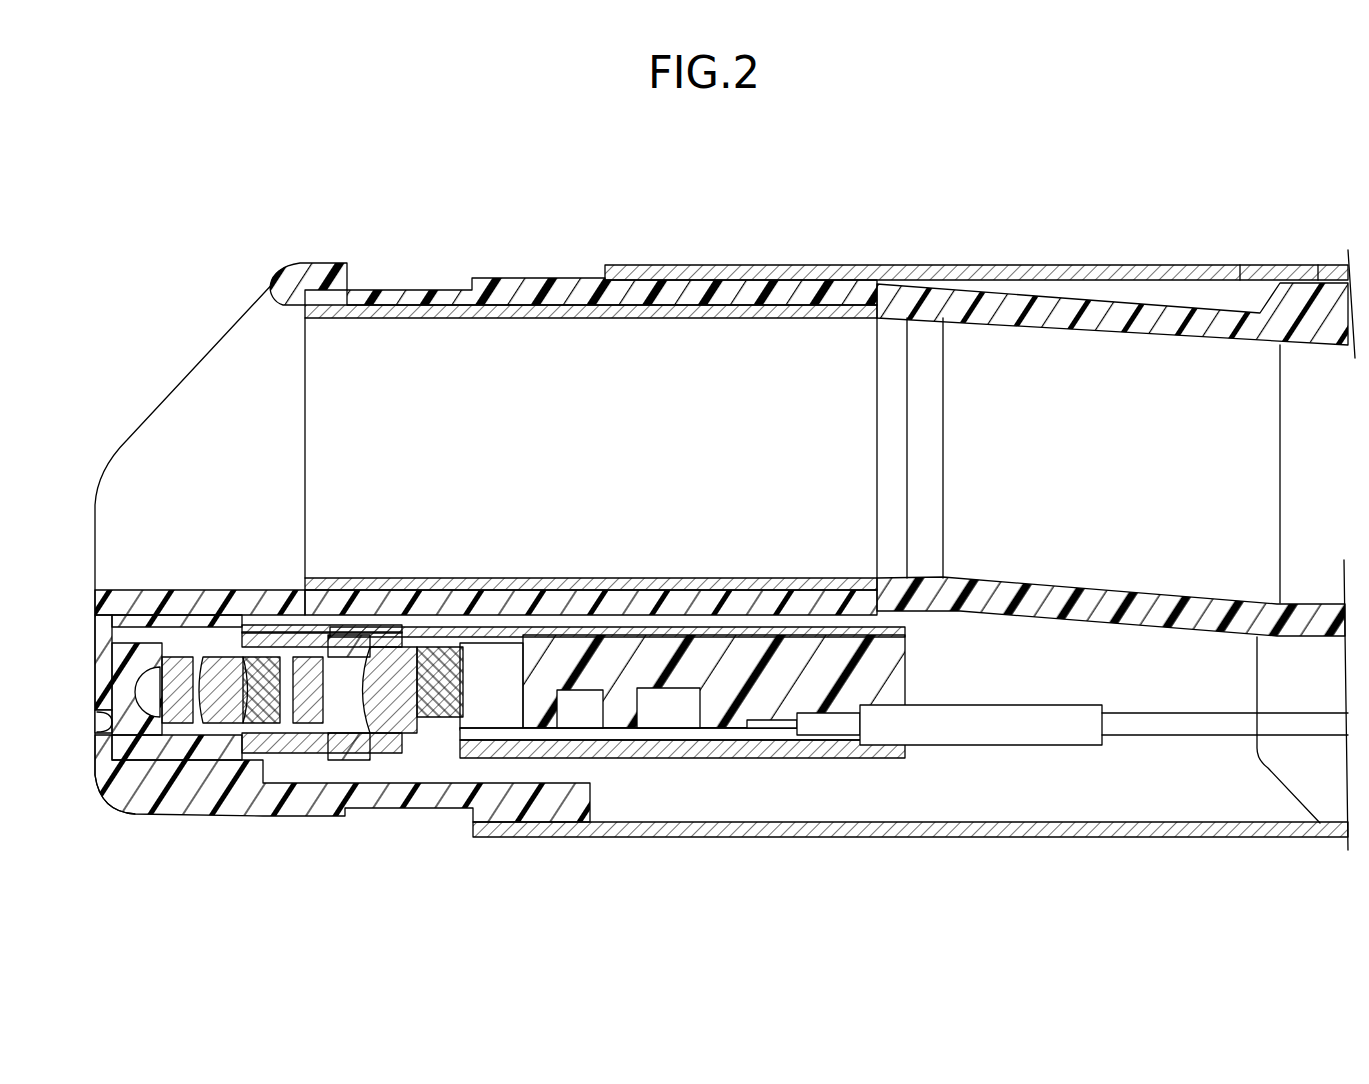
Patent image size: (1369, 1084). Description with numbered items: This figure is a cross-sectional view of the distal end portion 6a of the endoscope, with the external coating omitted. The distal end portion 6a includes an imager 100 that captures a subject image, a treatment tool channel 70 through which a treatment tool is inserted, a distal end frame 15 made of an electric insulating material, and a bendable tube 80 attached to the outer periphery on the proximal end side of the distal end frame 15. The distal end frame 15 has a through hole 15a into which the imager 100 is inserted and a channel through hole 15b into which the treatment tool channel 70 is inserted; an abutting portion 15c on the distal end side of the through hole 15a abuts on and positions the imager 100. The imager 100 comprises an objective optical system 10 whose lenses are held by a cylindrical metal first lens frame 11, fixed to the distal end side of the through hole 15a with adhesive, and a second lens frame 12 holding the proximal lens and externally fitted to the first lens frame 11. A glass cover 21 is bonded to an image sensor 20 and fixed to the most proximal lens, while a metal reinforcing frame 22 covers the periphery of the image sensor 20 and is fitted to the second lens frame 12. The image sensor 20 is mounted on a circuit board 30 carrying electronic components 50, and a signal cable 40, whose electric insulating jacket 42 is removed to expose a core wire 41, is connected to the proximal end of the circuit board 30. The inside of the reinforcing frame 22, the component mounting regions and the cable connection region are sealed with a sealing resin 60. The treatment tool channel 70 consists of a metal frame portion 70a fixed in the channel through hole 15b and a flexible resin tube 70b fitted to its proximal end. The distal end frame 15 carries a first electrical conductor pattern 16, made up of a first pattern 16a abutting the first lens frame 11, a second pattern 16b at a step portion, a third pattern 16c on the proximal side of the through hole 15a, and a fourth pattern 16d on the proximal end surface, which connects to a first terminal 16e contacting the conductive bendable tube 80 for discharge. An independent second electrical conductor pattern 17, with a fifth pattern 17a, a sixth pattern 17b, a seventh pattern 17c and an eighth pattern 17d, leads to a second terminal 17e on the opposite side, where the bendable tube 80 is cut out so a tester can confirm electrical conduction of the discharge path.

The distal end portion 6a is at (772, 228).
The objective optical system 10 is at (232, 735).
The first lens frame 11 is at (172, 745).
The second lens frame 12 is at (300, 740).
The distal end frame 15 is at (135, 448).
The through hole 15a is at (100, 716).
The channel through hole 15b is at (258, 300).
The abutting portion 15c is at (125, 815).
The first electrical conductor pattern 16 is at (190, 903).
The first pattern 16a is at (200, 740).
The second pattern 16b is at (278, 760).
The third pattern 16c is at (352, 760).
The fourth pattern 16d is at (535, 805).
The first terminal 16e is at (560, 838).
The second electrical conductor pattern 17 is at (652, 183).
The fifth pattern 17a is at (185, 622).
The sixth pattern 17b is at (415, 585).
The seventh pattern 17c is at (525, 617).
The eighth pattern 17d is at (593, 298).
The second terminal 17e is at (514, 288).
The image sensor 20 is at (490, 718).
The glass cover 21 is at (440, 720).
The reinforcing frame 22 is at (385, 740).
The circuit board 30 is at (718, 742).
The signal cable 40 is at (1157, 722).
The core wire 41 is at (778, 730).
The electric insulating jacket 42 is at (835, 745).
The electronic components 50 is at (668, 715).
The sealing resin 60 is at (895, 663).
The treatment tool channel 70 is at (365, 305).
The frame portion 70a is at (815, 282).
The tube 70b is at (1118, 302).
The bendable tube 80 is at (1000, 265).
The imager 100 is at (580, 715).